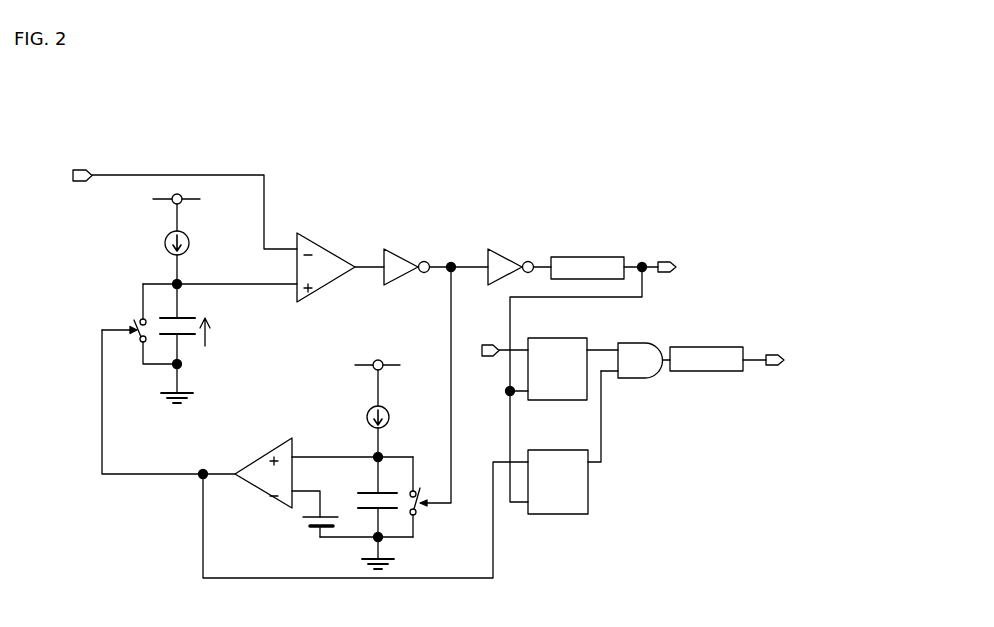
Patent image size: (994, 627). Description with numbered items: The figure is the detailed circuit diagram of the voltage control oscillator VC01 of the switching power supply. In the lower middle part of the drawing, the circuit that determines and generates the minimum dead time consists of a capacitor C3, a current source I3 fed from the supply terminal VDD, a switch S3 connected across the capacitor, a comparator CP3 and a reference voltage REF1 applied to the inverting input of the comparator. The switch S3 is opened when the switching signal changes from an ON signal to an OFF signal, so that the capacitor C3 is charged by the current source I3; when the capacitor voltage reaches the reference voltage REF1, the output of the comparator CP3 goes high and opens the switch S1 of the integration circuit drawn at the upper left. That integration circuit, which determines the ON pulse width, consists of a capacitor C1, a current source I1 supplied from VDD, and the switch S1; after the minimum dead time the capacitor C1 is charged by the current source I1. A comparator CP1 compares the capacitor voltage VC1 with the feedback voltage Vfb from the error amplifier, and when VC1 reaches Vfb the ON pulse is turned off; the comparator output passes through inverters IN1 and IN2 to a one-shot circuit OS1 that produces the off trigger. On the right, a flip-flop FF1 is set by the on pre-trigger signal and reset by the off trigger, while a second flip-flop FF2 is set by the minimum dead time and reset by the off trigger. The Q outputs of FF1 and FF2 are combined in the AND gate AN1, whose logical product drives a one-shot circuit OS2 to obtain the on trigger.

The voltage control oscillator VC01 is at (269, 160).
The feedback voltage Vfb is at (66, 177).
The supply voltage terminal VDD is at (265, 300).
The current source I1 is at (187, 274).
The switch S1 is at (139, 324).
The capacitor C1 is at (182, 353).
The voltage across the capacitor C1 VC1 is at (221, 332).
The comparator CP1 is at (340, 261).
The inverter IN1 is at (436, 256).
The inverter IN2 is at (519, 256).
The one-shot circuit OS1 is at (583, 258).
The flip-flop FF1 is at (553, 337).
The AND gate AN1 is at (635, 350).
The one-shot circuit OS2 is at (696, 348).
The flip-flop FF2 is at (555, 448).
The current source I3 is at (389, 449).
The switch S3 is at (427, 497).
The capacitor C3 is at (373, 522).
The comparator CP3 is at (276, 474).
The reference voltage REF1 is at (300, 527).